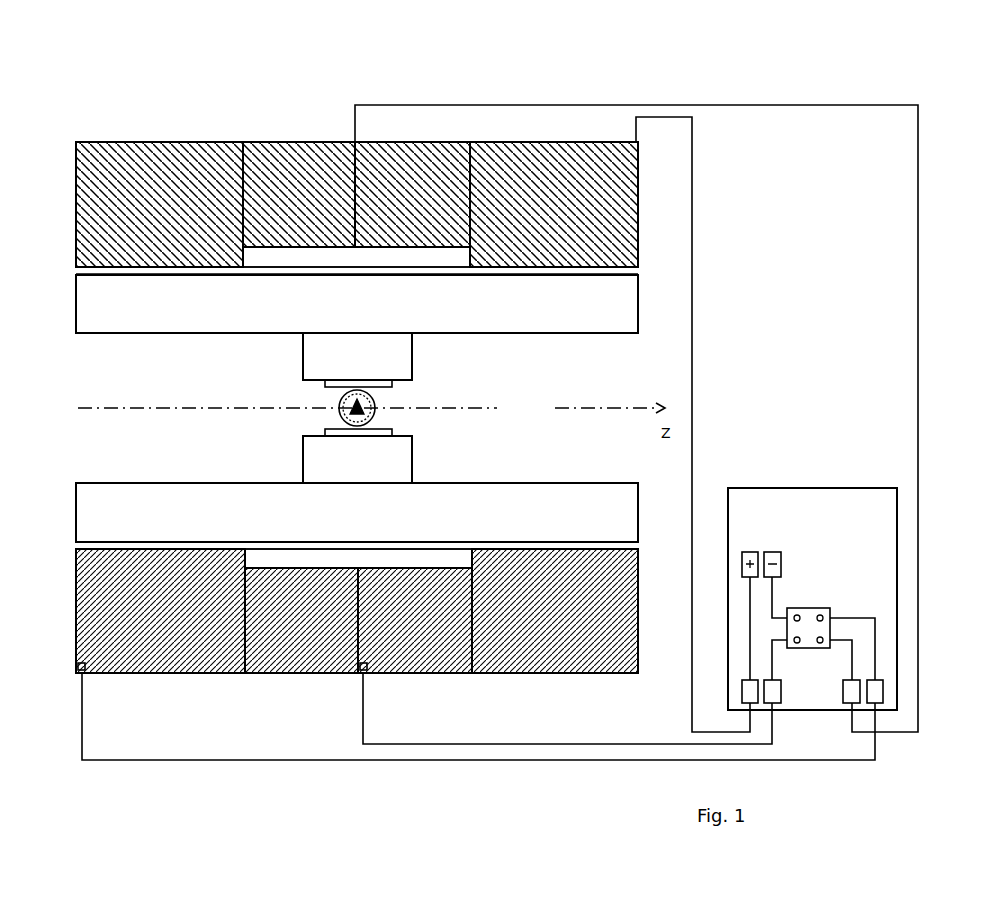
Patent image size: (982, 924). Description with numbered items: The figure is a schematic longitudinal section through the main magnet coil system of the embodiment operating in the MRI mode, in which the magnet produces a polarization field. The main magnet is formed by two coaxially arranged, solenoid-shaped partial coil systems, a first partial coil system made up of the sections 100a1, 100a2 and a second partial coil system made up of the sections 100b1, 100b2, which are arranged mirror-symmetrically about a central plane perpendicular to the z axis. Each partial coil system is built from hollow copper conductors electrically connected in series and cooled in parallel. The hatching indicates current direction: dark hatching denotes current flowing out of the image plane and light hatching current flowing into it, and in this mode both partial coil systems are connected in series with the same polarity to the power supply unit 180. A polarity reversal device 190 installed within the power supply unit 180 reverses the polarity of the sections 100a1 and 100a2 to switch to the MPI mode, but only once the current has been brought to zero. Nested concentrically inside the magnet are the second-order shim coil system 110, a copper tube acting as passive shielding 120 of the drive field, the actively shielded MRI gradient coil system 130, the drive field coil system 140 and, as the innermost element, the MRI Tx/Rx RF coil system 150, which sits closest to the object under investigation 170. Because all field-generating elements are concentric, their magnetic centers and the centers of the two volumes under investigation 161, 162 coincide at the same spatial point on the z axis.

The partial coil system a, first solenoid 100a1 is at (102, 157).
The partial coil system a, second solenoid 100a2 is at (260, 157).
The partial coil system b, second solenoid 100b2 is at (420, 167).
The partial coil system b, first solenoid 100b1 is at (593, 150).
The shim coil system 110 is at (247, 263).
The passive shielding 120 is at (641, 271).
The MRI gradient coil system 130 is at (123, 313).
The drive field coil system 140 is at (342, 340).
The MRI Tx/Rx RF coil system 150 is at (328, 388).
The volume under investigation 161 is at (373, 407).
The volume under investigation 162 is at (372, 402).
The object under investigation 170 is at (372, 413).
The power supply unit 180 is at (807, 493).
The polarity reversal device 190 is at (808, 608).